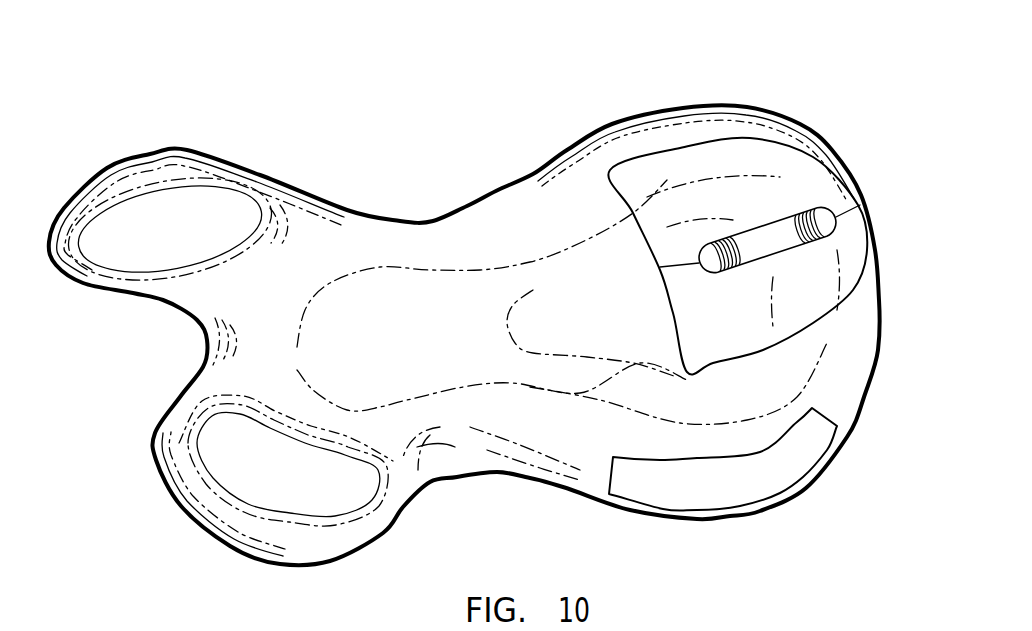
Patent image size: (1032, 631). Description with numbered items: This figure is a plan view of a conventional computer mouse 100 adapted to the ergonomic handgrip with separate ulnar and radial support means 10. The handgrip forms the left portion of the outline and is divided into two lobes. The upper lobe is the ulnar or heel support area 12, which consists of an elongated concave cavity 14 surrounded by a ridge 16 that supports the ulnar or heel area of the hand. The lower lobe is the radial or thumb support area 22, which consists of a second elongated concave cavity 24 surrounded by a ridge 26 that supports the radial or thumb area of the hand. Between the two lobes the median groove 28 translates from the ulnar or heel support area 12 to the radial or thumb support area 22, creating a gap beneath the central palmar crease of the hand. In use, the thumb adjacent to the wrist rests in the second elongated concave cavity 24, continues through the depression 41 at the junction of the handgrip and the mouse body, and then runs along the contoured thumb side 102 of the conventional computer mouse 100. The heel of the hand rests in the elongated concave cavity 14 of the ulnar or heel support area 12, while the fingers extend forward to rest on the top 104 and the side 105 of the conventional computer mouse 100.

The ergonomic handgrip with separate ulnar and radial support means 10 is at (323, 190).
The ulnar or heel support area 12 is at (72, 187).
The elongated concave cavity 14 is at (170, 246).
The ridge 16 is at (155, 177).
The radial or thumb support area 22 is at (193, 533).
The second elongated concave cavity 24 is at (292, 495).
The ridge 26 is at (270, 537).
The median groove 28 is at (215, 338).
The depression 41 is at (417, 447).
The conventional computer mouse 100 is at (838, 141).
The contoured thumb side 102 is at (557, 473).
The top 104 is at (522, 336).
The side 105 is at (545, 163).